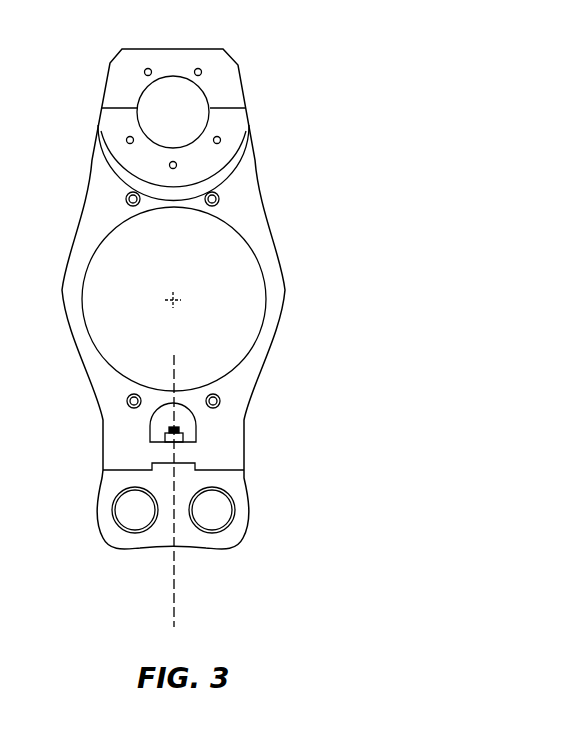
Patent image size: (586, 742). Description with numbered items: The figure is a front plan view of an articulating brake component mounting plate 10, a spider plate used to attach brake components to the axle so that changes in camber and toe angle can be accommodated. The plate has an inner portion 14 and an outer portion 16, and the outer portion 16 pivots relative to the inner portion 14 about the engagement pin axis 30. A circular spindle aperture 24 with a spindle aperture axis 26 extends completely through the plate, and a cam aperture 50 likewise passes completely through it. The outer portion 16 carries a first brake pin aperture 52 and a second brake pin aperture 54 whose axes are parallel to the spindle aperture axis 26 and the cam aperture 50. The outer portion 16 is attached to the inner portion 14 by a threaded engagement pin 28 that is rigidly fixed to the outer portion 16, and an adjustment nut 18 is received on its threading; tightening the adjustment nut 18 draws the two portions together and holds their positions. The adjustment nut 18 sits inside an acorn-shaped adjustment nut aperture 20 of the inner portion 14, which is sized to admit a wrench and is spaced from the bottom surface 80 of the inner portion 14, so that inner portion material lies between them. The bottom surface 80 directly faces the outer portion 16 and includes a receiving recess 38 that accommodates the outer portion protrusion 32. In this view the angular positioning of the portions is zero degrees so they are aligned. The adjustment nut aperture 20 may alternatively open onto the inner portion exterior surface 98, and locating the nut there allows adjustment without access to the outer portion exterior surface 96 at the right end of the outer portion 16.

The articulating brake component mounting plate 10 is at (303, 97).
The inner portion 14 is at (100, 377).
The outer portion 16 is at (105, 478).
The adjustment nut 18 is at (182, 434).
The adjustment nut aperture 20 is at (183, 412).
The spindle aperture 24 is at (242, 287).
The spindle aperture axis 26 is at (170, 300).
The engagement pin 28 is at (170, 430).
The engagement pin axis 30 is at (175, 587).
The outer portion protrusion 32 is at (190, 465).
The receiving recess 38 is at (183, 462).
The cam aperture 50 is at (158, 103).
The first brake pin aperture 52 is at (133, 525).
The second brake pin aperture 54 is at (212, 523).
The bottom surface 80 is at (118, 475).
The outer portion exterior surface 96 is at (256, 513).
The inner portion exterior surface 98 is at (266, 364).